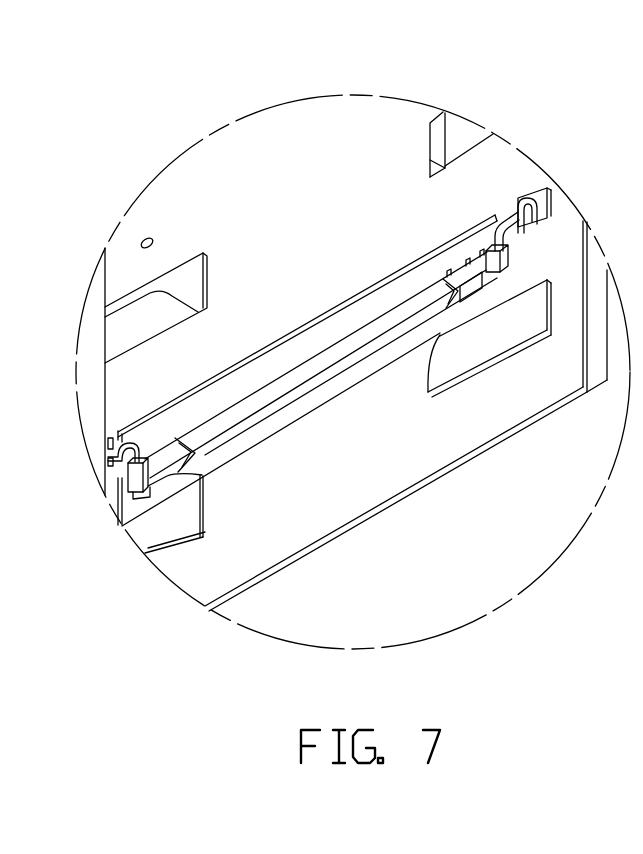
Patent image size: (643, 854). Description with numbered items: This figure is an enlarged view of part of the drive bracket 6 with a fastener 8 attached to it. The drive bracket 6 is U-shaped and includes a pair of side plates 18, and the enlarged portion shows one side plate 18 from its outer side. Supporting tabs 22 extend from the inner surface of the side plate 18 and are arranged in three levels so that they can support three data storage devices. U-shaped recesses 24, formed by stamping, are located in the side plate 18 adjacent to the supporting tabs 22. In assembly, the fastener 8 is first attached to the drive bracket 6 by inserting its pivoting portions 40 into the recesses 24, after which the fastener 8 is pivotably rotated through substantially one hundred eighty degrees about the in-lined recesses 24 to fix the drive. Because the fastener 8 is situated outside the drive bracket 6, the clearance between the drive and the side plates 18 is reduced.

The drive bracket 6 is at (288, 150).
The fastener 8 is at (324, 338).
The side plate 18 is at (456, 197).
The supporting tab 22 is at (433, 400).
The U-shaped recess 24 is at (519, 202).
The pivoting portion 40 is at (506, 212).